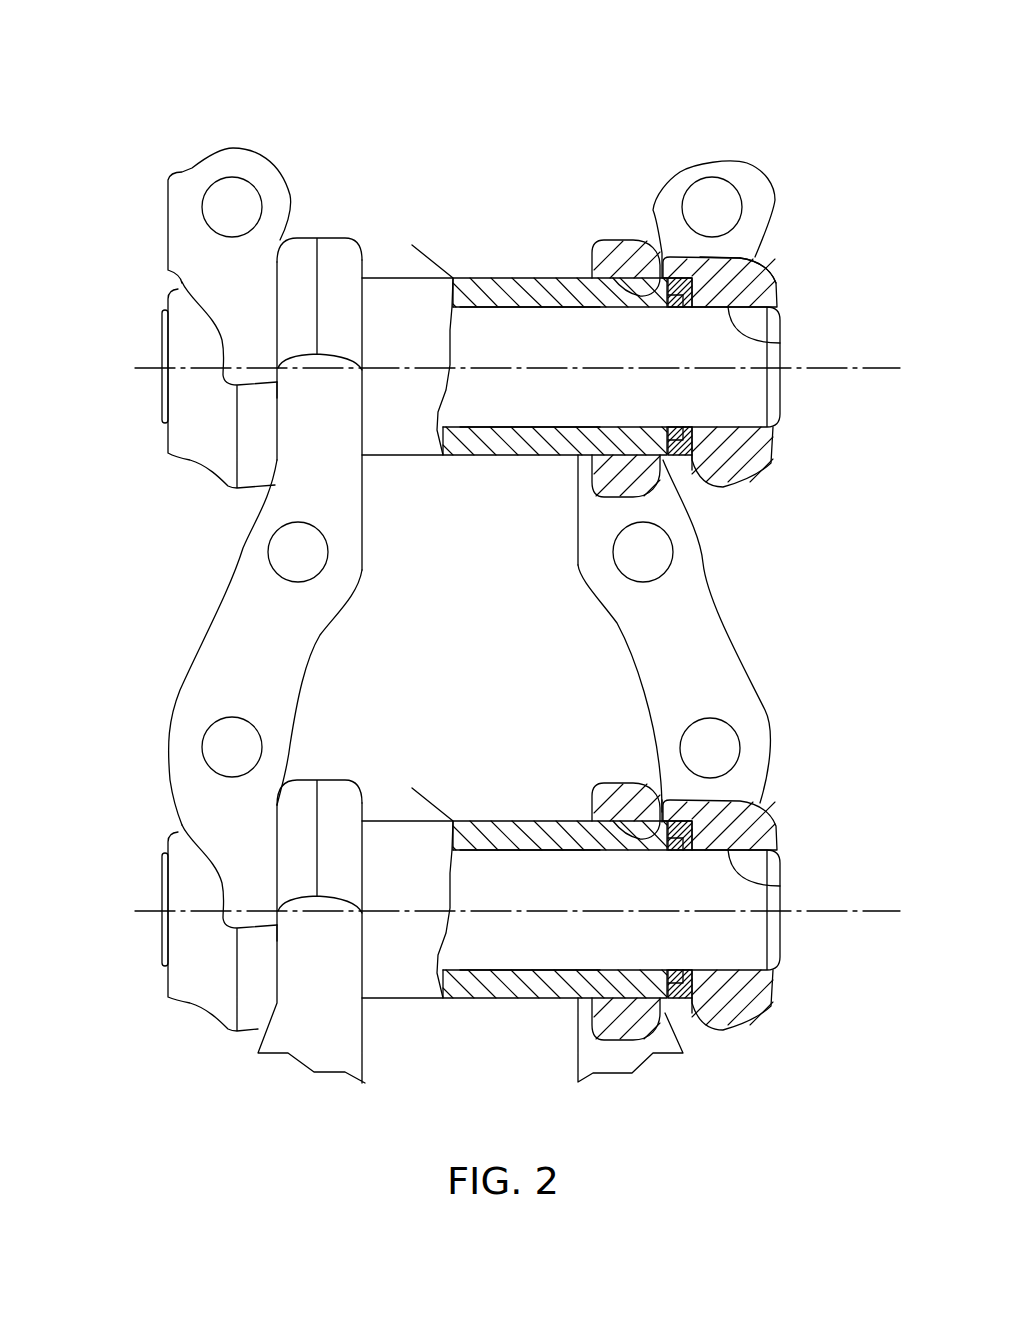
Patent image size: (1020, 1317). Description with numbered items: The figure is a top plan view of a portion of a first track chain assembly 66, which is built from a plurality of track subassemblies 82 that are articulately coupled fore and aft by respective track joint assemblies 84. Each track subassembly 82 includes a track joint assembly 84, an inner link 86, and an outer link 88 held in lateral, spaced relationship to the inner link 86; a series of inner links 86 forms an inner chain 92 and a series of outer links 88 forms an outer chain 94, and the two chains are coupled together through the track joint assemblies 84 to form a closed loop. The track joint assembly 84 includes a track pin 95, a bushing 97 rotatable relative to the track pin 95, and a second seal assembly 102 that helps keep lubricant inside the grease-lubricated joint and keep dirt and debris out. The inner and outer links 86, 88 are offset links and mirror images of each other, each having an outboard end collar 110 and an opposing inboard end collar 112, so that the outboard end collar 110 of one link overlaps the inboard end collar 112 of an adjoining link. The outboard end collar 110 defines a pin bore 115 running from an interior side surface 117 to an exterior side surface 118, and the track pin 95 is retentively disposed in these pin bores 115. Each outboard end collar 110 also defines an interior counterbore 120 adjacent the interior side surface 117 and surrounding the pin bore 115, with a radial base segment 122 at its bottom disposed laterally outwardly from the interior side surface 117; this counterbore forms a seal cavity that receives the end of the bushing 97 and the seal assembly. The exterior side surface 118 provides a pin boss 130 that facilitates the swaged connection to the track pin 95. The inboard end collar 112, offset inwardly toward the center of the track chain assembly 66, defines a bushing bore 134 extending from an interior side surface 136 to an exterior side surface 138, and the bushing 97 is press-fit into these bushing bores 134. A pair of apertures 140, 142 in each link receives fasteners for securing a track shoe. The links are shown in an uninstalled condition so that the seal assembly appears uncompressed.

The first track chain assembly 66 is at (150, 92).
The track subassembly 82 is at (160, 298).
The track joint assembly 84 is at (463, 457).
The inner link 86 is at (202, 178).
The outer link 88 is at (760, 198).
The inner chain 92 is at (226, 590).
The outer chain 94 is at (712, 583).
The track pin 95 is at (517, 337).
The bushing 97 is at (468, 288).
The second seal assembly 102 is at (690, 268).
The outboard end collar 110 is at (767, 287).
The inboard end collar 112 is at (342, 258).
The pin bore 115 is at (775, 344).
The interior side surface 117 is at (290, 397).
The exterior side surface 118 is at (773, 437).
The interior counterbore 120 is at (770, 255).
The radial base segment 122 is at (758, 283).
The pin boss 130 is at (777, 297).
The bushing bore 134 is at (683, 278).
The interior side surface 136 is at (590, 268).
The exterior side surface 138 is at (668, 475).
The aperture 140 is at (212, 725).
The aperture 142 is at (268, 536).